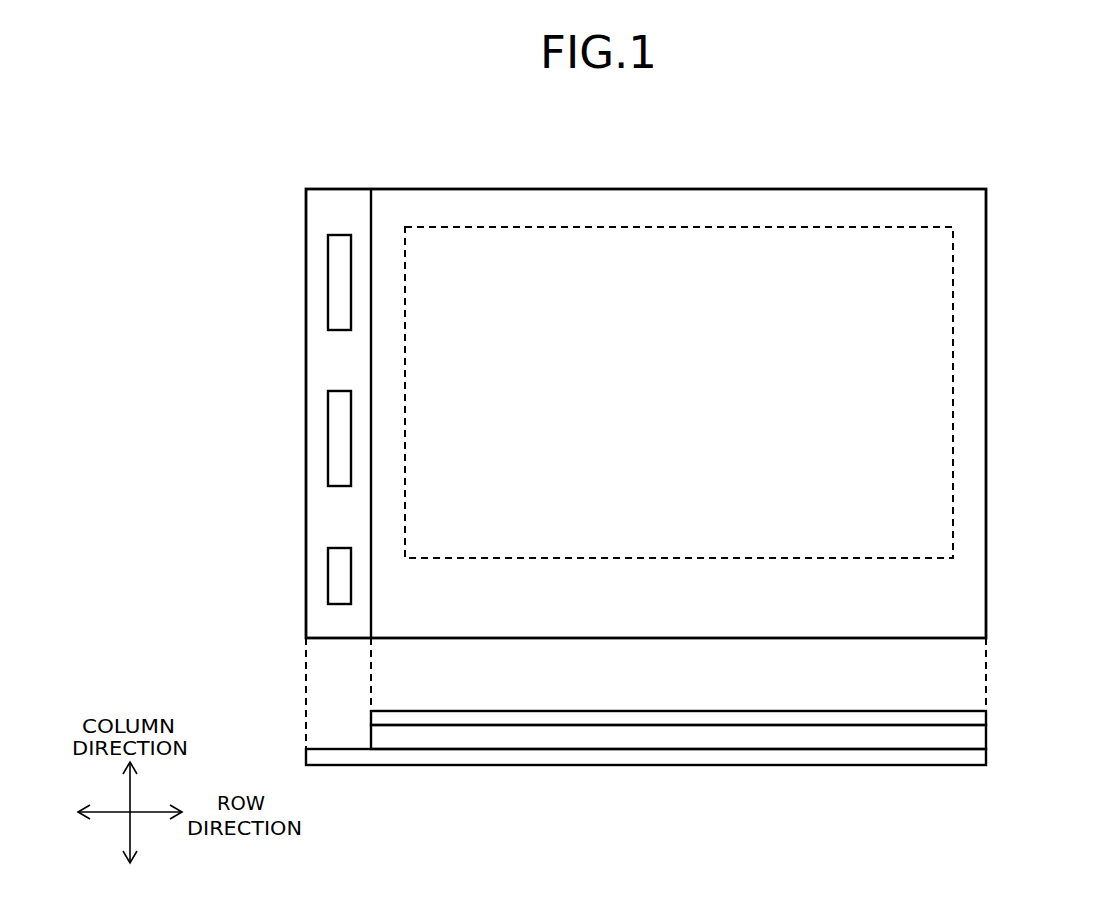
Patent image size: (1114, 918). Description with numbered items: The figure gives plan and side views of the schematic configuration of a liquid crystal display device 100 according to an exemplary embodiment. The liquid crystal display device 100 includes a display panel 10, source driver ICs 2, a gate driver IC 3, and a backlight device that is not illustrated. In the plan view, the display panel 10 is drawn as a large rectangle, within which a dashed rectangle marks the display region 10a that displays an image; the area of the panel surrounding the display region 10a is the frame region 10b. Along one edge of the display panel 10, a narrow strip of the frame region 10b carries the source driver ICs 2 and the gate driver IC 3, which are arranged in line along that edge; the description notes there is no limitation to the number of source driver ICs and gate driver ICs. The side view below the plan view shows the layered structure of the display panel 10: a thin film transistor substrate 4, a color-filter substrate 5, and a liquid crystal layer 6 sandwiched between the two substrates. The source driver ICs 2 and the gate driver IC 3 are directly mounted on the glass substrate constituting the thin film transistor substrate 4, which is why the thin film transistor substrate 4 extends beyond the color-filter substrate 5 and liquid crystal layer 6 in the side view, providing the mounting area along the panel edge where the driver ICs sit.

The liquid crystal display device 100 is at (981, 142).
The display panel 10 is at (880, 189).
The display region 10a is at (955, 396).
The frame region 10b is at (972, 296).
The source driver IC 2 is at (336, 280).
The gate driver IC 3 is at (336, 578).
The thin film transistor substrate 4 is at (979, 757).
The color-filter substrate 5 is at (979, 719).
The liquid crystal layer 6 is at (979, 740).